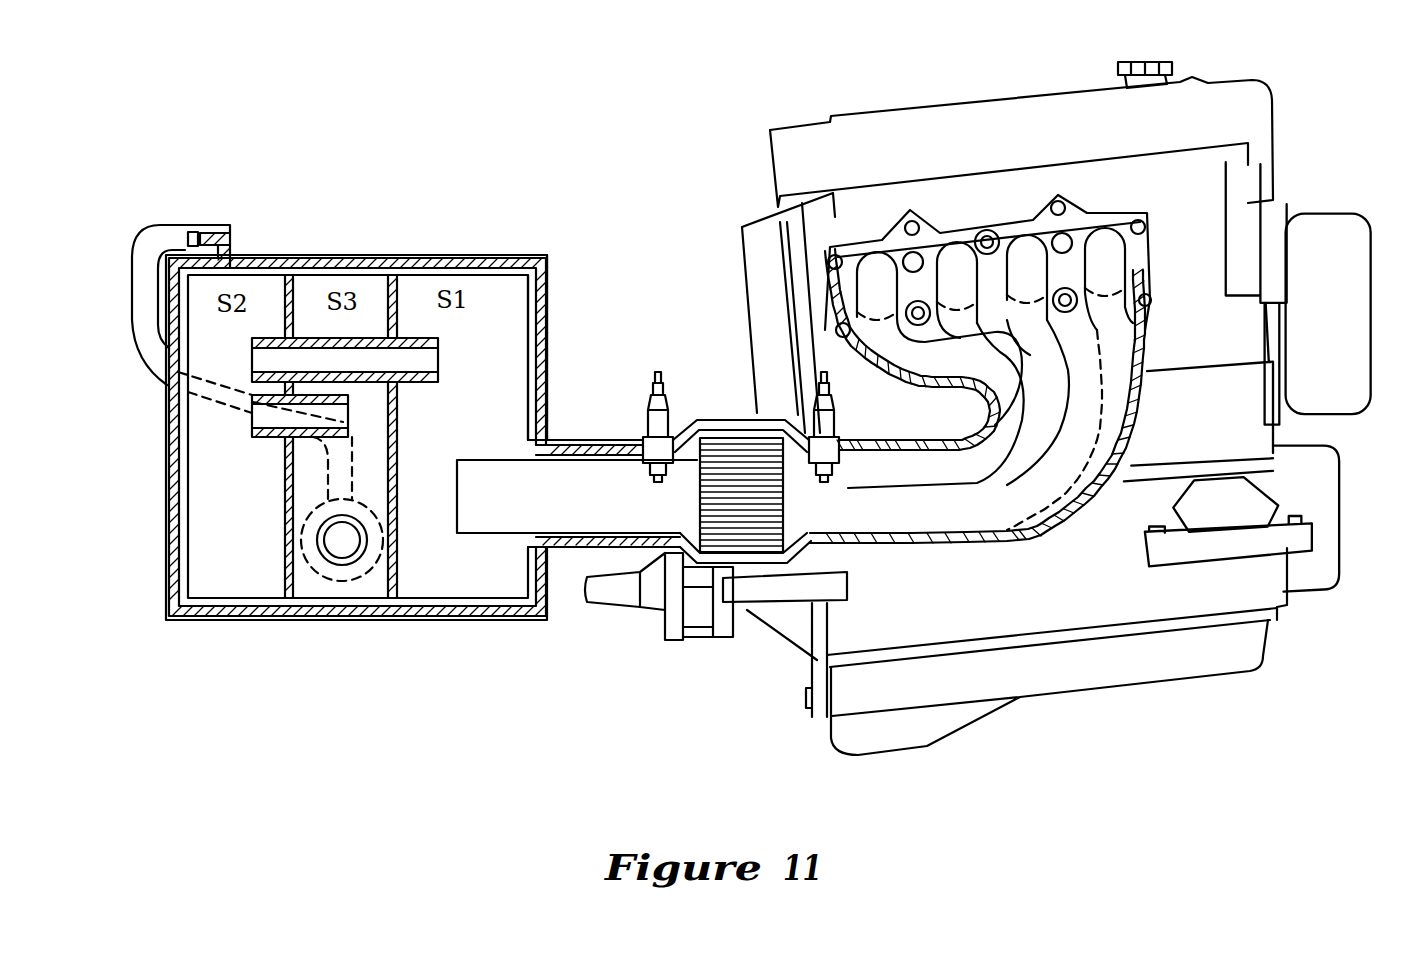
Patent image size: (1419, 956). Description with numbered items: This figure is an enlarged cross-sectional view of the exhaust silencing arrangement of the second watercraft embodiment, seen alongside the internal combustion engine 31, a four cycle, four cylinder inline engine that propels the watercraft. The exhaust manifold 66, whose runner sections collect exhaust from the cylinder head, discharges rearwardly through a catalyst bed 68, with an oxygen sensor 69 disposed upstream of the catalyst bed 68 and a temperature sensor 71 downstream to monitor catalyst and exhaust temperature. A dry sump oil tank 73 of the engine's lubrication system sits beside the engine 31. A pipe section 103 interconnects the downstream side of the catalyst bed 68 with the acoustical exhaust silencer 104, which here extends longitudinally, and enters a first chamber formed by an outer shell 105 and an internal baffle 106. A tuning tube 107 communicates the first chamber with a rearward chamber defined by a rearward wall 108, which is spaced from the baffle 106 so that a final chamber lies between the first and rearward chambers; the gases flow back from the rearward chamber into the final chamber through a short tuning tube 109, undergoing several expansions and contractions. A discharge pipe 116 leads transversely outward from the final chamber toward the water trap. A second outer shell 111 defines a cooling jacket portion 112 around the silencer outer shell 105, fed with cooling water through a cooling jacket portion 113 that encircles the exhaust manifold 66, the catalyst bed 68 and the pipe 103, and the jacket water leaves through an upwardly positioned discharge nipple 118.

The internal combustion engine 31 is at (851, 113).
The exhaust manifold 66 is at (1007, 507).
The catalyst bed 68 is at (733, 455).
The oxygen sensor 69 is at (845, 422).
The temperature sensor 71 is at (662, 392).
The dry sump oil tank 73 is at (1318, 212).
The pipe section 103 is at (568, 533).
The acoustical exhaust silencer 104 is at (540, 255).
The outer shell 105 is at (433, 265).
The internal baffle 106 is at (397, 480).
The tuning tube 107 is at (417, 380).
The rearward wall 108 is at (285, 520).
The short tuning tube 109 is at (268, 437).
The outer shell 111 is at (547, 292).
The cooling jacket portion 112 is at (547, 322).
The cooling jacket portion 113 is at (587, 430).
The discharge pipe 116 is at (358, 548).
The discharge nipple 118 is at (233, 242).